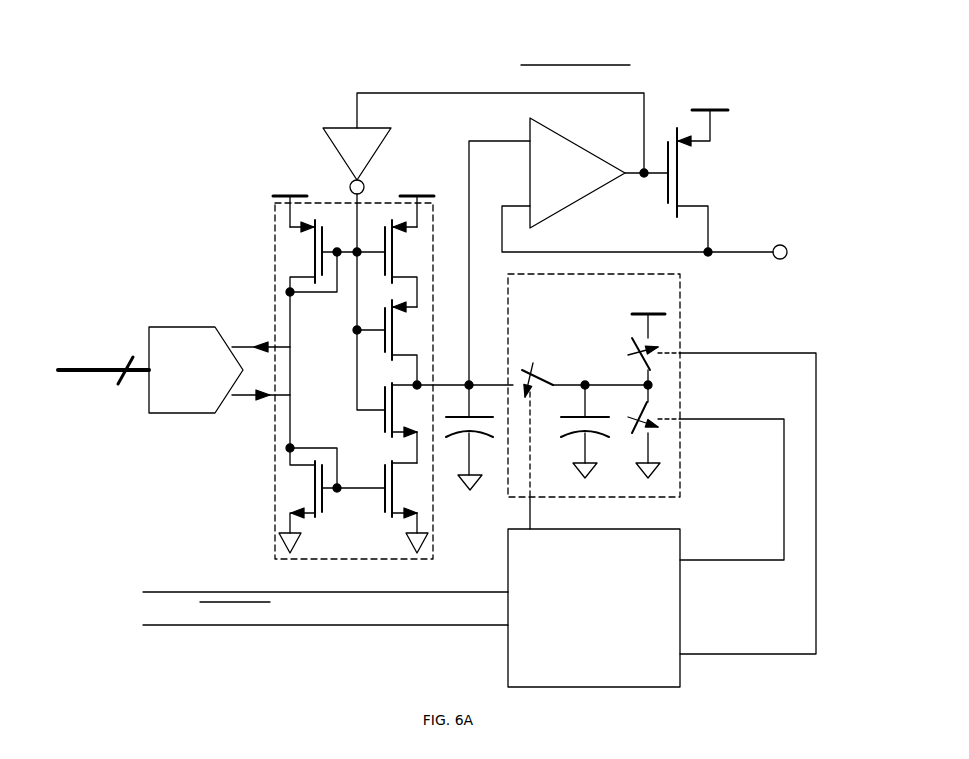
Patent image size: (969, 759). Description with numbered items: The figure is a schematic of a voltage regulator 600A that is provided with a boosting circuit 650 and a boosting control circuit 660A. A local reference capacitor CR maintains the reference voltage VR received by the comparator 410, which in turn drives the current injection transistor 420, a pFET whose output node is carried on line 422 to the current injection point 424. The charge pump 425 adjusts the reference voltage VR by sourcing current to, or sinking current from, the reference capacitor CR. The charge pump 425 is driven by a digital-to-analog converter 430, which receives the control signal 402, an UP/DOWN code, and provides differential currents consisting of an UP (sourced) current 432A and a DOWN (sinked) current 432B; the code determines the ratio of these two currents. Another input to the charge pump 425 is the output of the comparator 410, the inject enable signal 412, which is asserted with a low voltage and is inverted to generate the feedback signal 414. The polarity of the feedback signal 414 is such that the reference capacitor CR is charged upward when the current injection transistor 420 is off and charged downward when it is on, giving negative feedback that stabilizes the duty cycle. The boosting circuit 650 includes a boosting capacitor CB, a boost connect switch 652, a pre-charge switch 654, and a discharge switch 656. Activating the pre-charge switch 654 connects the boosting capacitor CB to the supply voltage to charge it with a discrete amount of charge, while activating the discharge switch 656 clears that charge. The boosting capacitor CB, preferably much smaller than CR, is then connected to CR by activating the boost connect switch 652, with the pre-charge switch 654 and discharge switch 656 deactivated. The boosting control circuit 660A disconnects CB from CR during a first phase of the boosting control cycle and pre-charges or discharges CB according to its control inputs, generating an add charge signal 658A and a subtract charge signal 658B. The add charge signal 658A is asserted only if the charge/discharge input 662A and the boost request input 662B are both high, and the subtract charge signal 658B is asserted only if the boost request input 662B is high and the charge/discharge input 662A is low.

The voltage regulator 600A is at (172, 106).
The control signal 402 is at (100, 372).
The digital-to-analog converter 430 is at (191, 389).
The UP current 432A is at (246, 346).
The DOWN current 432B is at (246, 398).
The charge pump 425 is at (275, 497).
The feedback signal 414 is at (356, 374).
The inject enable signal 412 is at (443, 95).
The comparator 410 is at (578, 156).
The current injection transistor 420 is at (665, 183).
The regulated output line 422 is at (739, 250).
The current injection point 424 is at (778, 245).
The boosting circuit 650 is at (588, 402).
The boost connect switch 652 is at (552, 383).
The pre-charge switch 654 is at (652, 374).
The discharge switch 656 is at (652, 402).
The add charge signal 658A is at (773, 356).
The subtract charge signal 658B is at (736, 422).
The boosting control circuit 660A is at (575, 636).
The charge/discharge input 662A is at (334, 627).
The boost request input 662B is at (416, 594).